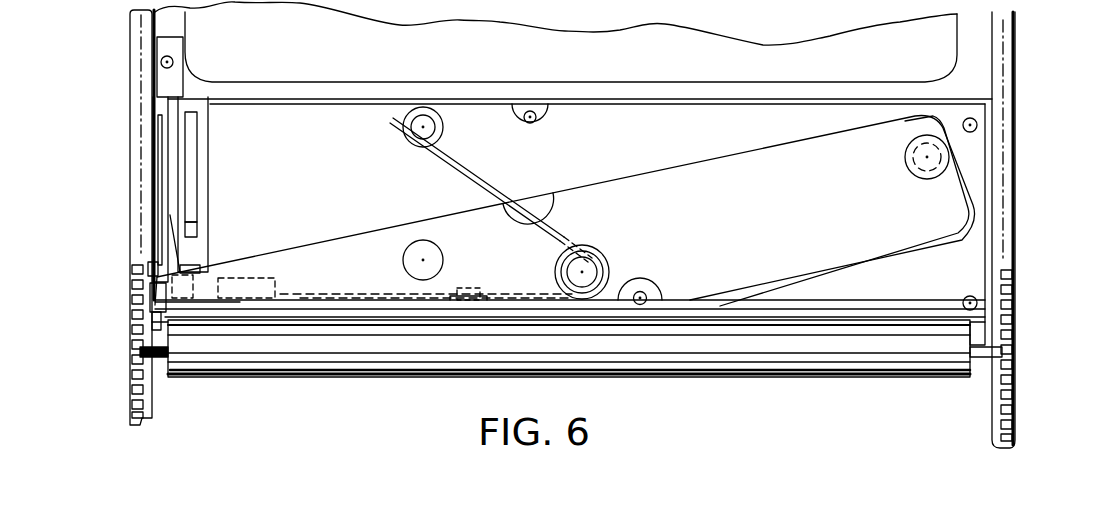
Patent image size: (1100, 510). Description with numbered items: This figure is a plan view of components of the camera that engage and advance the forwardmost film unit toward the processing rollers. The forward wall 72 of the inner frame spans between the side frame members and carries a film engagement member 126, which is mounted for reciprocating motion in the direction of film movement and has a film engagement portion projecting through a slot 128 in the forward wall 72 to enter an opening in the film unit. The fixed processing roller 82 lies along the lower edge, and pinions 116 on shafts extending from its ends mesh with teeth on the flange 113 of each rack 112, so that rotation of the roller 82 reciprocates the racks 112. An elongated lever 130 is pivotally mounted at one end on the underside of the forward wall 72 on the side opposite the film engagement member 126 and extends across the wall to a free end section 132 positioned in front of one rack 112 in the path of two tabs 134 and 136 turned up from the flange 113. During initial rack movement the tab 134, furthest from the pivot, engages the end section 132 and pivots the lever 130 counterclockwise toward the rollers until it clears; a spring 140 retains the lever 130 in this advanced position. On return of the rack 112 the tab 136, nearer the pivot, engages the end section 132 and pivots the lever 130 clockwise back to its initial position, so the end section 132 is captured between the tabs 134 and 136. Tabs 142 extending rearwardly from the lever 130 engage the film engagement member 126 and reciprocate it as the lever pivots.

The forward wall 72 is at (340, 189).
The processing roller 82 is at (340, 352).
The rack 112 is at (122, 193).
The flange 113 is at (143, 176).
The pinion 116 is at (132, 352).
The film engagement member 126 is at (212, 285).
The slot 128 is at (193, 188).
The lever 130 is at (646, 187).
The free end section 132 is at (150, 297).
The tab 134 is at (148, 267).
The tab 136 is at (152, 318).
The spring 140 is at (468, 173).
The tab 142 is at (193, 262).